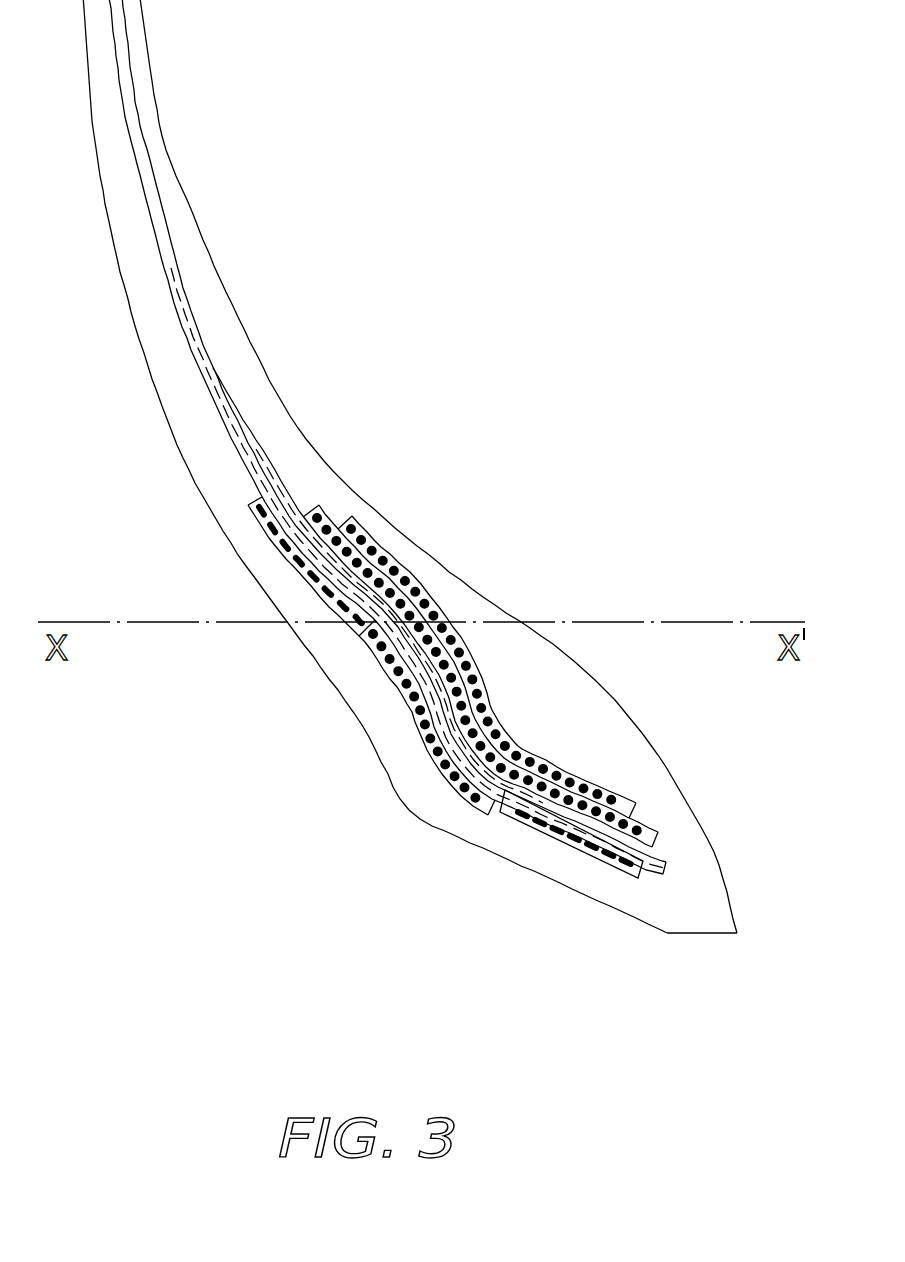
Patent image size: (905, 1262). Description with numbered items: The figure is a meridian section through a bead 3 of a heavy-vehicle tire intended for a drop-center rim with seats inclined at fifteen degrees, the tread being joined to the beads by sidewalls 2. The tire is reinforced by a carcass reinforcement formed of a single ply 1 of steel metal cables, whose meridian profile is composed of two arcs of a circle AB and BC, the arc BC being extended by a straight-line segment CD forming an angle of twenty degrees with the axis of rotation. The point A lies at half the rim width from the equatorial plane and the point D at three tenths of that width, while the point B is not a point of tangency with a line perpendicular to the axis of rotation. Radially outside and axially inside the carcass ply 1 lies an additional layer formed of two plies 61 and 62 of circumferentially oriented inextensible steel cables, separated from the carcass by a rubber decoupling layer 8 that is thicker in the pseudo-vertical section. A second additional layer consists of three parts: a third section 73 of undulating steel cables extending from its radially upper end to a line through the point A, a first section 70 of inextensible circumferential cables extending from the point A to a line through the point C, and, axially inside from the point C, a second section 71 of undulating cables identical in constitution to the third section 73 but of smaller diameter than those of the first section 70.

The carcass ply 1 is at (156, 215).
The sidewall 2 is at (173, 397).
The bead 3 is at (628, 743).
The rubber decoupling layer 8 is at (440, 677).
The first additional ply 61 is at (318, 524).
The second additional ply 62 is at (420, 598).
The first section 70 is at (400, 692).
The second section 71 is at (587, 847).
The third section 73 is at (285, 552).
The point A is at (375, 623).
The point B is at (437, 735).
The point C is at (507, 793).
The point D is at (670, 863).